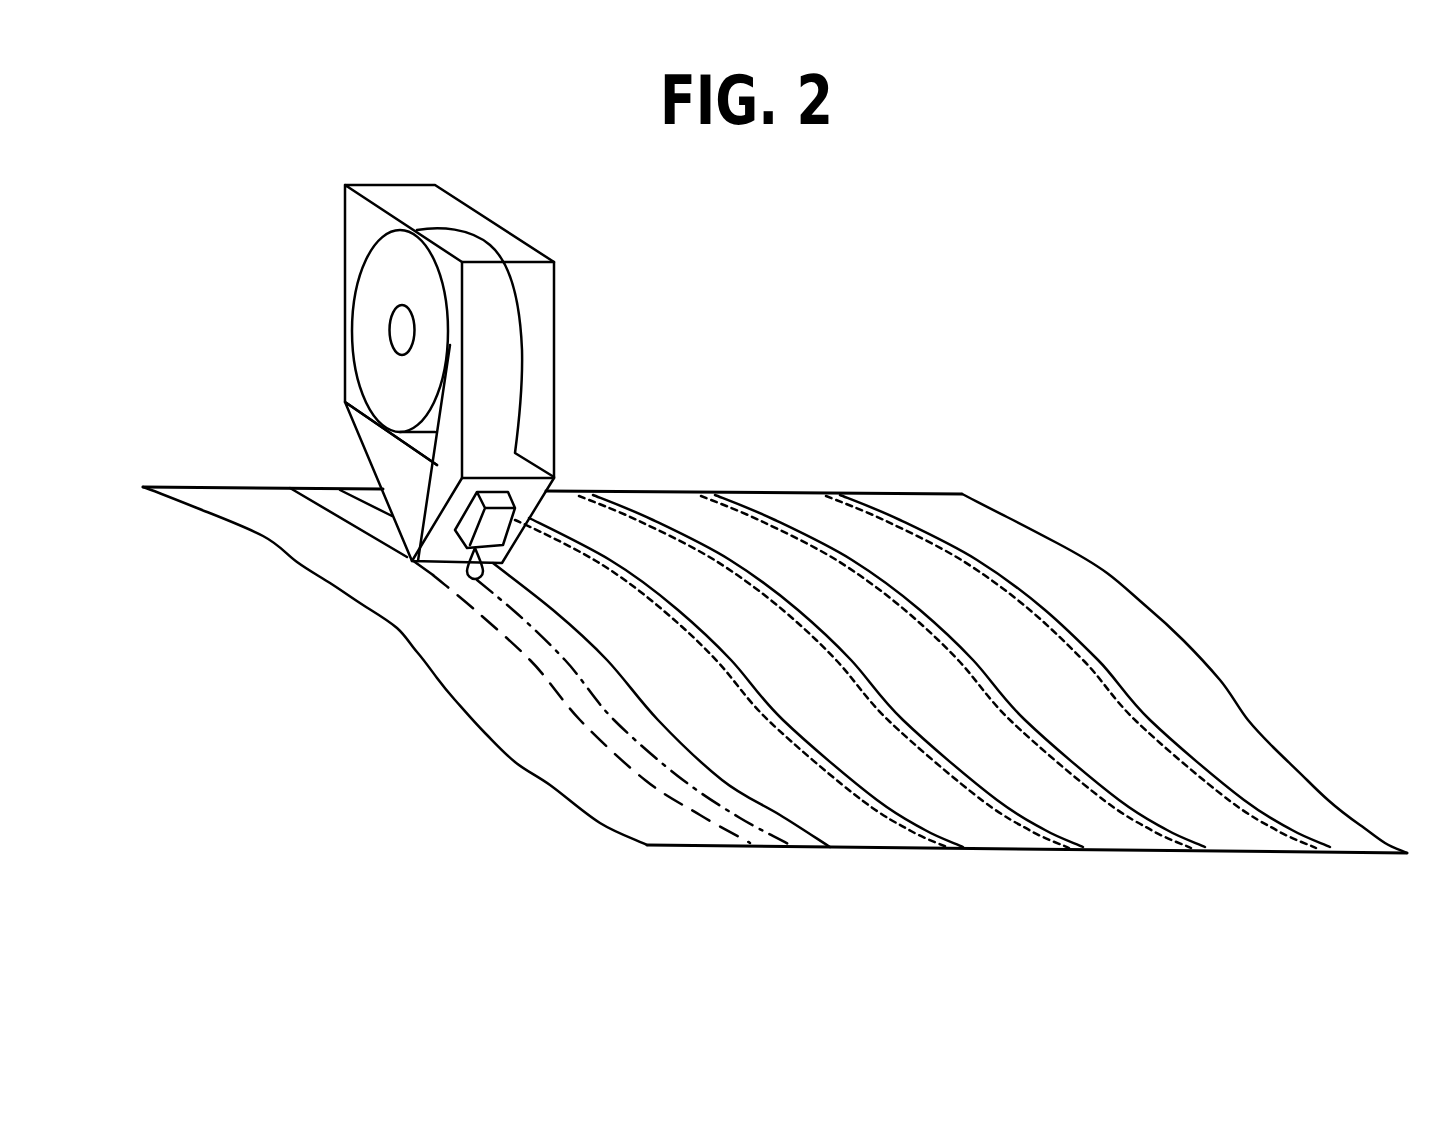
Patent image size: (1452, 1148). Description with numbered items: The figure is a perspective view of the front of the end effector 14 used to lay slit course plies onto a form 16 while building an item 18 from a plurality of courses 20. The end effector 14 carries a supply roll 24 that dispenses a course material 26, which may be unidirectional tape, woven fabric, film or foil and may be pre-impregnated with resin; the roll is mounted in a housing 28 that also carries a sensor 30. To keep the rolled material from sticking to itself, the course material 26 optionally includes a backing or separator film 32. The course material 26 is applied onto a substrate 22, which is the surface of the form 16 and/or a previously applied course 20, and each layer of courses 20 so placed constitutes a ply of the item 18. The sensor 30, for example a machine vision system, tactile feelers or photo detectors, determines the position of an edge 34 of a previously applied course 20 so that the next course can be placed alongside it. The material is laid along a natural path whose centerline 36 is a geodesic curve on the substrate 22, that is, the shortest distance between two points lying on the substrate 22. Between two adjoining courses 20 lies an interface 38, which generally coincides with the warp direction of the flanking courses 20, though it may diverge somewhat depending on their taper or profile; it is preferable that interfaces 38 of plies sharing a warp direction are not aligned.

The end effector 14 is at (458, 361).
The form 16 is at (492, 700).
The item 18 is at (1232, 650).
The courses 20 is at (1007, 835).
The substrate 22 is at (395, 666).
The supply roll 24 is at (400, 323).
The course material 26 is at (498, 333).
The housing 28 is at (557, 380).
The sensor 30 is at (497, 520).
The separator film 32 is at (420, 474).
The edge 34 is at (797, 830).
The centerline 36 is at (690, 787).
The interface 38 is at (1341, 853).